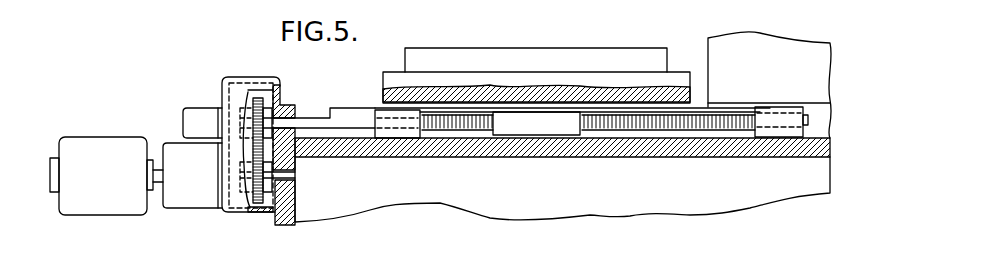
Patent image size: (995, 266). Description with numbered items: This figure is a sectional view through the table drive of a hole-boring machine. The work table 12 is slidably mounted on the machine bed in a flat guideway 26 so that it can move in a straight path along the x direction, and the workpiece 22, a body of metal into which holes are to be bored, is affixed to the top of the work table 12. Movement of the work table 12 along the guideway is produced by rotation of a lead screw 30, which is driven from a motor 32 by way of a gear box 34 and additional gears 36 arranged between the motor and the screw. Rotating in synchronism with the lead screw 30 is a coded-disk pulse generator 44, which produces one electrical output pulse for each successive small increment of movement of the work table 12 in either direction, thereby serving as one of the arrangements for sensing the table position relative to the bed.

The work table 12 is at (383, 76).
The workpiece 22 is at (452, 48).
The flat guideway 26 is at (333, 108).
The lead screw 30 is at (460, 130).
The motor 32 is at (93, 137).
The gear box 34 is at (186, 207).
The additional gears 36 is at (249, 213).
The coded-disk pulse generator 44 is at (196, 109).